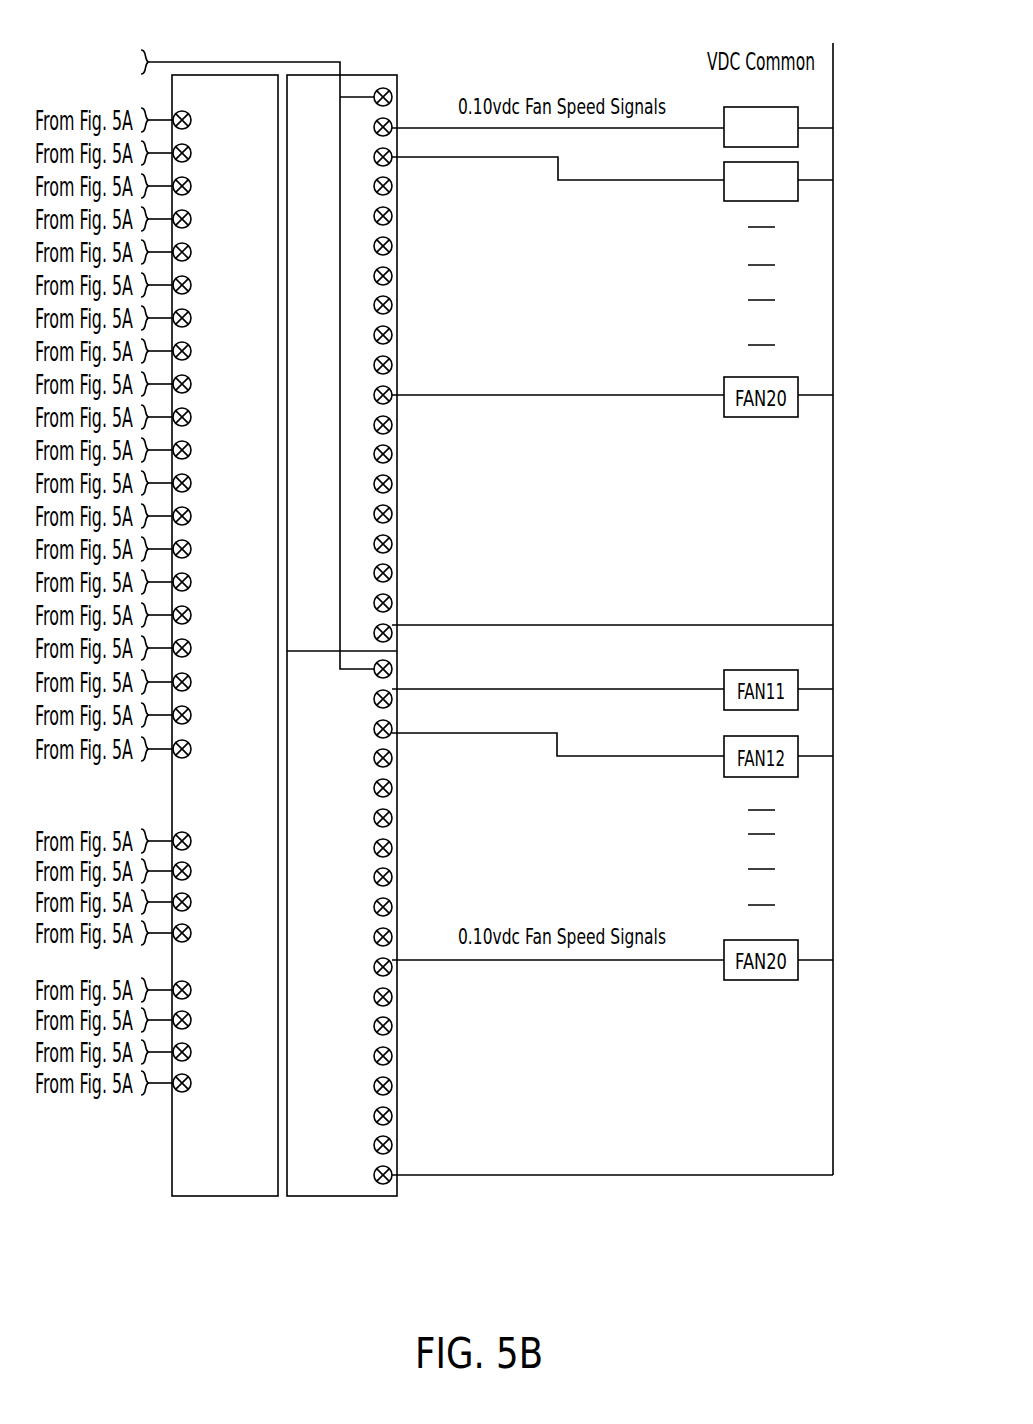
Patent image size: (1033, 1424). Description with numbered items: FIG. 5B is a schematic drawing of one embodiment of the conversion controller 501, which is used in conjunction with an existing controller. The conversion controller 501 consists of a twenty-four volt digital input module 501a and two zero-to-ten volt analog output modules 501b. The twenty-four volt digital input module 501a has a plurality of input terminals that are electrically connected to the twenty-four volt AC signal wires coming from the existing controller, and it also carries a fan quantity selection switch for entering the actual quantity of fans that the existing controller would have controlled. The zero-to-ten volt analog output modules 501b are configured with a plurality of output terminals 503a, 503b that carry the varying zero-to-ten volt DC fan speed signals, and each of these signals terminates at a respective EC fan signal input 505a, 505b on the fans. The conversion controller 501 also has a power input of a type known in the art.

The conversion controller 501 is at (216, 663).
The 24 volt digital input module 501a is at (226, 84).
The 0-10 volt analog output module 501b is at (352, 85).
The output terminal 503a is at (412, 125).
The output terminal 503b is at (493, 157).
The EC fan signal input 505a is at (800, 118).
The EC fan signal input 505b is at (800, 173).